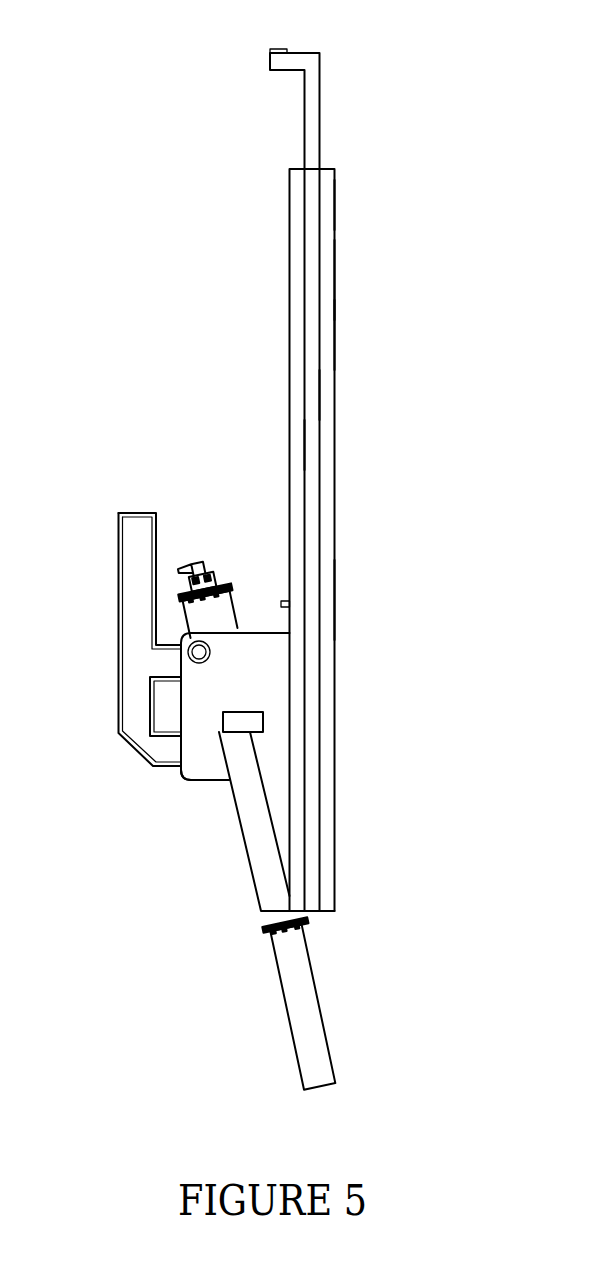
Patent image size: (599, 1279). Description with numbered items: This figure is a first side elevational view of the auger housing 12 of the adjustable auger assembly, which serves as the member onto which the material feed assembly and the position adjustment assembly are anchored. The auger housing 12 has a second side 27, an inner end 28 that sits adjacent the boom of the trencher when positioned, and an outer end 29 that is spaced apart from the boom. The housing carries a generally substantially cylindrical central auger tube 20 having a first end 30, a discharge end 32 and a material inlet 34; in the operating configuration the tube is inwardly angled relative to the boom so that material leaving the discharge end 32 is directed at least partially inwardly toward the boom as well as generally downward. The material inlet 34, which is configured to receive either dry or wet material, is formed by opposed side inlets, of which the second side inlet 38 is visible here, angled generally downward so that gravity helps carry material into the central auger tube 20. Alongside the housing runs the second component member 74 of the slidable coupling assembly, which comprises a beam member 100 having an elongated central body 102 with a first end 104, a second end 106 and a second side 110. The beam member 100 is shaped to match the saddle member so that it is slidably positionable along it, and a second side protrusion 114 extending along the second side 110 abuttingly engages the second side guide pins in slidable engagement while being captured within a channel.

The auger housing 12 is at (343, 483).
The central auger tube 20 is at (261, 965).
The second side 27 is at (279, 670).
The inner end 28 is at (343, 601).
The outer end 29 is at (92, 703).
The first end 30 is at (208, 566).
The discharge end 32 is at (322, 1090).
The material inlet 34 is at (212, 766).
The second side inlet 38 is at (257, 722).
The second component member 74 is at (344, 278).
The beam member 100 is at (334, 332).
The elongated central body 102 is at (334, 203).
The first end 104 is at (337, 60).
The second end 106 is at (334, 911).
The second side 110 is at (320, 392).
The second side protrusion 114 is at (310, 443).